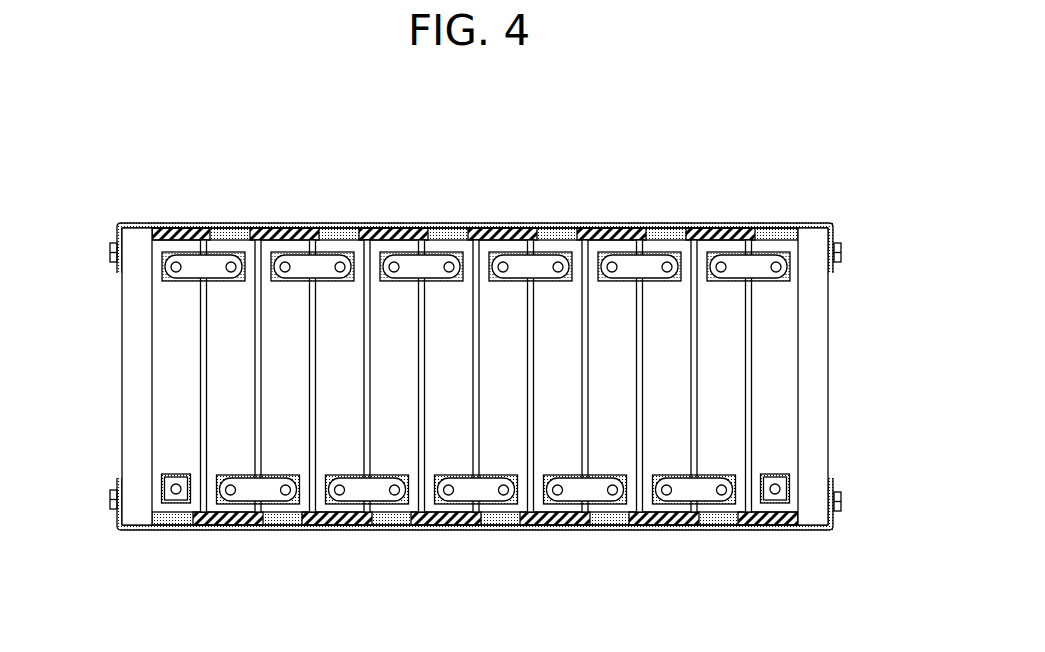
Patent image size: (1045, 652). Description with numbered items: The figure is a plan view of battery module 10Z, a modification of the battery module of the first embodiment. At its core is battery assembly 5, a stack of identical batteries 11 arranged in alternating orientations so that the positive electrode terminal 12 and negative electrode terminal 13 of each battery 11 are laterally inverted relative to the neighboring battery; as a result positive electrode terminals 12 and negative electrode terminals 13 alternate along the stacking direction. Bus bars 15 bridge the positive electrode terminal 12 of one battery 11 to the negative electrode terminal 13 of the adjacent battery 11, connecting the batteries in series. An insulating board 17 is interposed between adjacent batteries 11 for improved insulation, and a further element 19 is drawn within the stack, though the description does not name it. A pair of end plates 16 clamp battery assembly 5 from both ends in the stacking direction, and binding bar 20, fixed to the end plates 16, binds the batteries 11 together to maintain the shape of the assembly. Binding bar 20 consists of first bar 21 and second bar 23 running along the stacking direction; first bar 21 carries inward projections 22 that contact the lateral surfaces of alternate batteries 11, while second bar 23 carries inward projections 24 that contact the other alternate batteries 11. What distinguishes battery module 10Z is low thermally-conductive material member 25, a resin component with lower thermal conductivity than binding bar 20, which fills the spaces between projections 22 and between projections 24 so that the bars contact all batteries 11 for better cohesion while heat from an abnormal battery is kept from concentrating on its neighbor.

The battery module 10Z is at (810, 140).
The battery assembly 5 is at (606, 538).
The battery 11 is at (713, 508).
The positive electrode terminal 12 is at (274, 252).
The negative electrode terminal 13 is at (297, 497).
The bus bar 15 is at (322, 256).
The end plate 16 is at (133, 389).
The insulating board 17 is at (749, 427).
The electrode body 19 is at (281, 428).
The binding bar 20 is at (840, 220).
The first bar 21 is at (507, 224).
The projection 22 is at (561, 224).
The second bar 23 is at (550, 531).
The projection 24 is at (493, 531).
The low thermally-conductive material member 25 is at (619, 224).